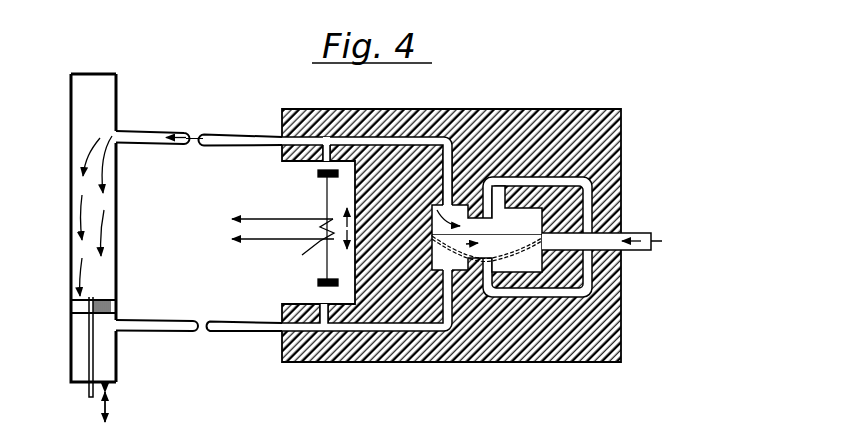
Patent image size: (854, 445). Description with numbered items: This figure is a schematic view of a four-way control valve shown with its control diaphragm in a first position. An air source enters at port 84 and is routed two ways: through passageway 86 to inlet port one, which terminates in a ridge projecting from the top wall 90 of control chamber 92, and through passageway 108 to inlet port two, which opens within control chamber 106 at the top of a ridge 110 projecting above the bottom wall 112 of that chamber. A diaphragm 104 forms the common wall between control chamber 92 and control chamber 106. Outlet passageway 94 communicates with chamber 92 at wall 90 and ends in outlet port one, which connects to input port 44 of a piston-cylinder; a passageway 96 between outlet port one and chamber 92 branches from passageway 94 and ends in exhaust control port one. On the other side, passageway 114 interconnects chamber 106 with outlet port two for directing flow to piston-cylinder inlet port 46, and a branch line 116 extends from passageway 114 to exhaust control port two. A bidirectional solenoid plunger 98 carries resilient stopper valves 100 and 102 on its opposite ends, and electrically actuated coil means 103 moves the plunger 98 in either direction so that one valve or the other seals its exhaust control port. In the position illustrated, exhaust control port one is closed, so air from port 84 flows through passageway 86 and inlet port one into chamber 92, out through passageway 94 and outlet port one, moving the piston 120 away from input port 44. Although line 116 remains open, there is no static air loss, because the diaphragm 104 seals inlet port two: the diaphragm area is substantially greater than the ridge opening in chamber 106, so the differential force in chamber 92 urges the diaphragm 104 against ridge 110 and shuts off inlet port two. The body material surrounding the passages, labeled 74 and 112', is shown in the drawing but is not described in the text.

The input port 44 is at (253, 133).
The piston-cylinder inlet port 46 is at (210, 320).
The fluidic amplifier body 74 is at (498, 108).
The air source port 84 is at (633, 232).
The passageway 86 is at (558, 178).
The top wall 90 is at (451, 182).
The control chamber 92 is at (488, 210).
The outlet passageway 94 is at (388, 138).
The passageway 96 is at (326, 136).
The bidirectional solenoid plunger 98 is at (325, 207).
The resilient stopper valve 100 is at (318, 177).
The resilient stopper valve 102 is at (318, 284).
The electrically actuated coil means 103 is at (305, 253).
The diaphragm 104 is at (400, 240).
The control chamber 106 is at (488, 253).
The passageway 108 is at (525, 262).
The ridge 110 is at (520, 270).
The bottom wall 112 is at (562, 268).
The wall portion 112' is at (469, 312).
The passageway 114 is at (381, 333).
The branch line 116 is at (318, 310).
The piston 120 is at (108, 302).